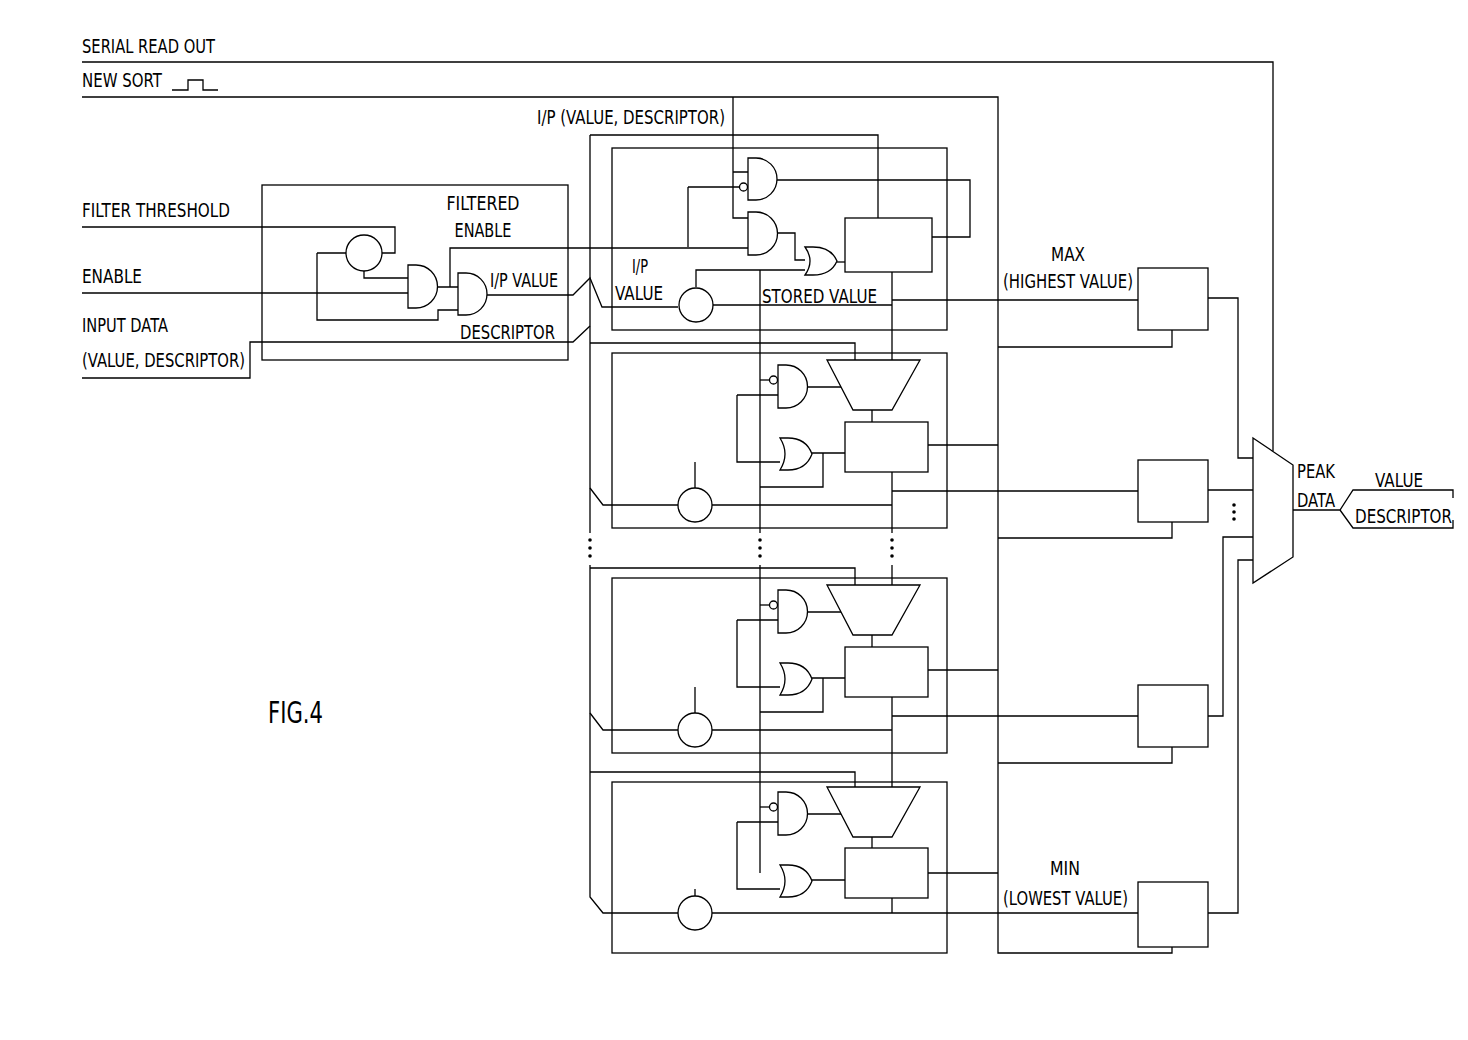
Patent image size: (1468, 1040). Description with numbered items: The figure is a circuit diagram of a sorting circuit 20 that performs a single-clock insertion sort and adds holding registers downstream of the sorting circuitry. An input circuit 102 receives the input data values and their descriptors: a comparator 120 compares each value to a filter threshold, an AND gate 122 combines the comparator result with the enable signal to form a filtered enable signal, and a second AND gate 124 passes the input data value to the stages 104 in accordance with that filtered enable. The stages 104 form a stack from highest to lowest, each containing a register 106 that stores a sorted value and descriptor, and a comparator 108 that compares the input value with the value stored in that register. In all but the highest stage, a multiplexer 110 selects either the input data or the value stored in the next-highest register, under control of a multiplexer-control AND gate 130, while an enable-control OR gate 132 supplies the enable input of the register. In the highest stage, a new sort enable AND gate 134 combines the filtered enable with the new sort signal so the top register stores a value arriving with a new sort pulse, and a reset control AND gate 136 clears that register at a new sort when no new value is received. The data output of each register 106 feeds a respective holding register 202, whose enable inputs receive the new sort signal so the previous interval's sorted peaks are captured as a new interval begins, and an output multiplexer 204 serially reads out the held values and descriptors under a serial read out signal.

The sorting circuit 20 is at (1340, 183).
The input circuit 102 is at (304, 364).
The stages 104 is at (948, 796).
The registers 106 is at (932, 264).
The comparators 108 is at (681, 902).
The multiplexers 110 is at (906, 378).
The comparator 120 is at (347, 251).
The AND gate 122 is at (424, 265).
The second AND gate 124 is at (468, 273).
The multiplexer-control AND gate 130 is at (803, 399).
The enable-control OR gate 132 is at (818, 247).
The new sort enable AND gate 134 is at (748, 236).
The reset control AND gate 136 is at (778, 175).
The holding registers 202 is at (1158, 882).
The output multiplexer 204 is at (1284, 462).